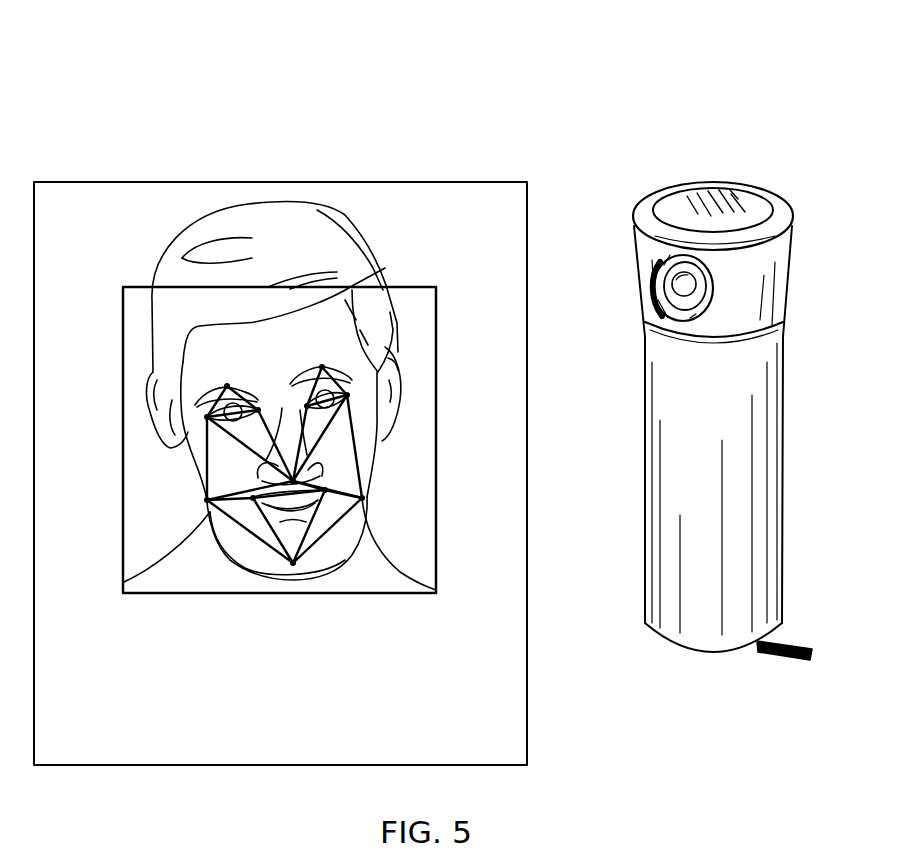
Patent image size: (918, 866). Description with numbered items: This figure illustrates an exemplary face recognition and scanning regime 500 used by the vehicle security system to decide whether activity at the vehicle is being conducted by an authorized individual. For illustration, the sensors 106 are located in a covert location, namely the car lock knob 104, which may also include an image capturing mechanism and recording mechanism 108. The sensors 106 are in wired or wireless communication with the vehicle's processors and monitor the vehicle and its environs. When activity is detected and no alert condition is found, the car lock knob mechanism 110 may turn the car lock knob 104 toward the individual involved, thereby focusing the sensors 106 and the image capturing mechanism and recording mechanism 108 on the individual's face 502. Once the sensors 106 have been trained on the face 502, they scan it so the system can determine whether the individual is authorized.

The face recognition and scanning regime 500 is at (637, 87).
The face 502 is at (393, 405).
The car lock knob 104 is at (750, 180).
The sensors 106 is at (657, 292).
The image capturing mechanism and recording mechanism 108 is at (655, 307).
The car lock knob mechanism 110 is at (780, 656).